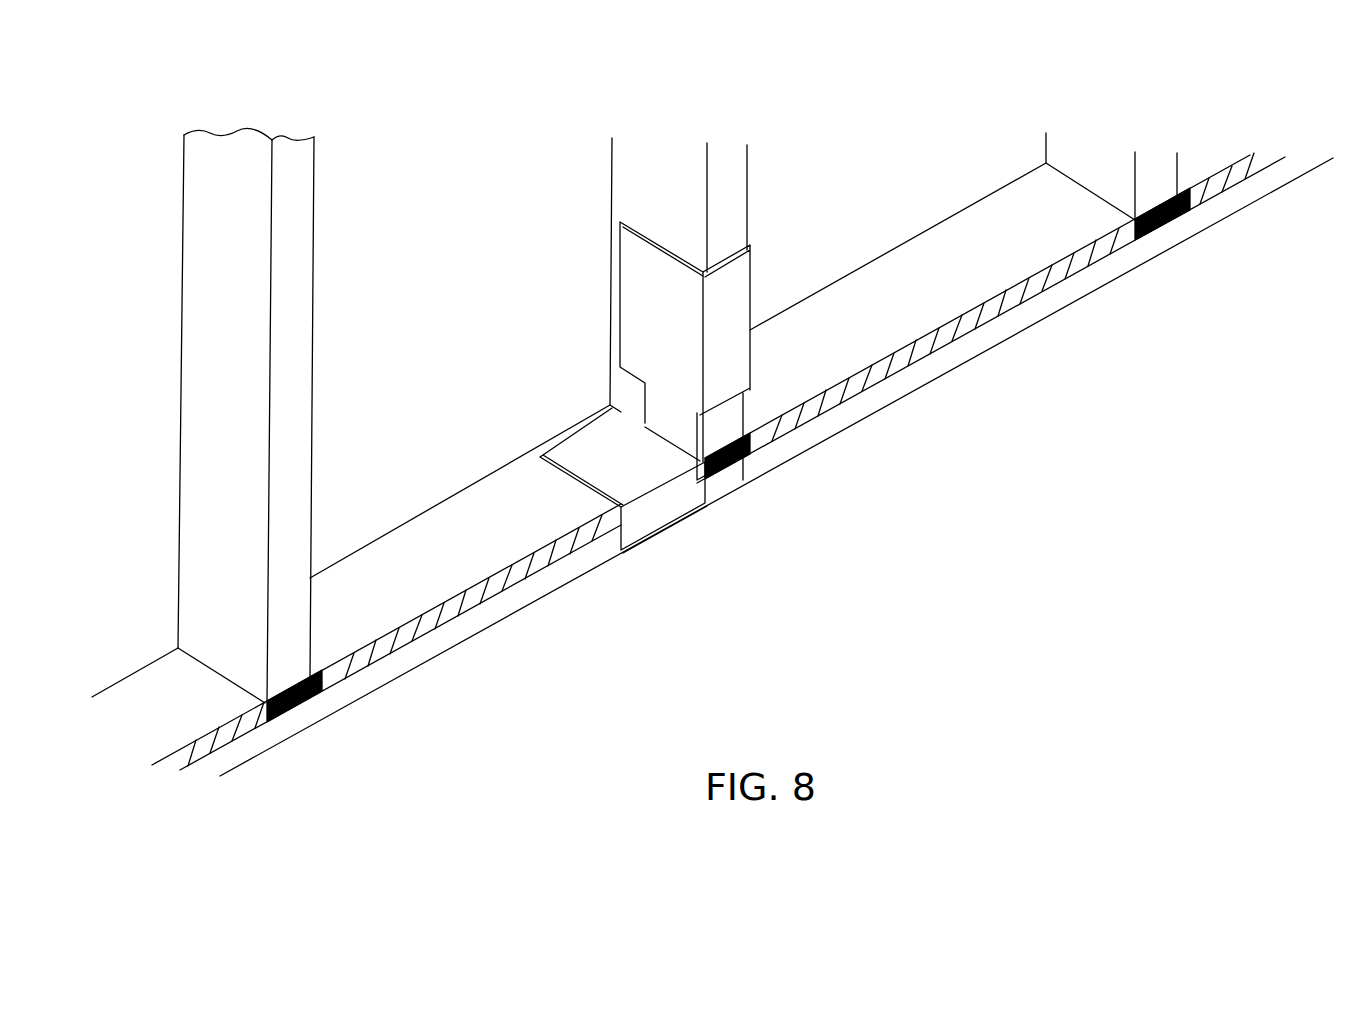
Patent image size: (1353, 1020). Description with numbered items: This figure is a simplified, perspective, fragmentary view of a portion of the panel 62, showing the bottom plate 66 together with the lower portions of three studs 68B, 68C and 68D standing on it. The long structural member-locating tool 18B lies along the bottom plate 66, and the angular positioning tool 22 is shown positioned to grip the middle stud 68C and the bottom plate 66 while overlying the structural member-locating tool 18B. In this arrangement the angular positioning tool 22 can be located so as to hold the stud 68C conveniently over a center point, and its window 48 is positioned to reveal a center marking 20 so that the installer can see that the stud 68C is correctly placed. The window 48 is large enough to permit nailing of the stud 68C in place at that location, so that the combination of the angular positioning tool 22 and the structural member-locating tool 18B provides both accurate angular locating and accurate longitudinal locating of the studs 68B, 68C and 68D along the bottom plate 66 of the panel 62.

The panel 62 is at (873, 105).
The structural member-locating tool 18B is at (482, 586).
The bottom plate 66 is at (447, 636).
The center marking 20 is at (720, 466).
The stud 68B is at (296, 394).
The stud 68C is at (722, 215).
The stud 68D is at (1147, 180).
The angular positioning tool 22 is at (772, 274).
The window 48 is at (727, 423).